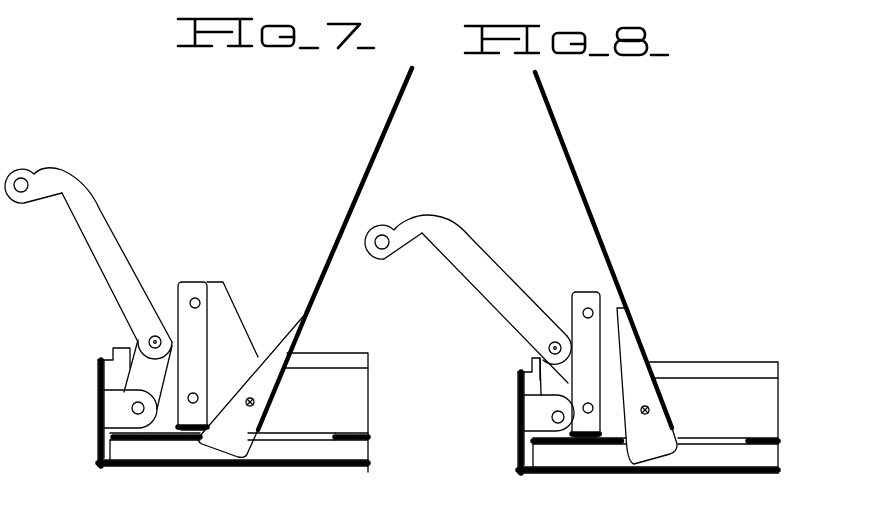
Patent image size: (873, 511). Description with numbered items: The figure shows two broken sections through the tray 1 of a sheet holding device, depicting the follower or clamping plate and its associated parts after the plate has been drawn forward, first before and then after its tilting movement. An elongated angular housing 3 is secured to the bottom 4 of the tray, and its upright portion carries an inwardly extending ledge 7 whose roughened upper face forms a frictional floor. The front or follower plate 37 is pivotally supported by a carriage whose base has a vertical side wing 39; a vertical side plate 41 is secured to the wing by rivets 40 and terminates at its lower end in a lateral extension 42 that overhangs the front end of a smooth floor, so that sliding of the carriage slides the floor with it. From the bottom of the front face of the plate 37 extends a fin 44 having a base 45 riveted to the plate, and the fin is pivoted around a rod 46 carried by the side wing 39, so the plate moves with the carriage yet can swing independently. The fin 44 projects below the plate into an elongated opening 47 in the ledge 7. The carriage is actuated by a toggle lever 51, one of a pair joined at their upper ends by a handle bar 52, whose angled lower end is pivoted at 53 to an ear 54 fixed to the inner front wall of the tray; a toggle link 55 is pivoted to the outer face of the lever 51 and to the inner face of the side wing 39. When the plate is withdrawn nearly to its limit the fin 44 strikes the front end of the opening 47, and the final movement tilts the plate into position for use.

In FIG. 7, the tray 1 is at (368, 381).
In FIG. 8, the tray 1 is at (747, 368).
In FIG. 7, the elongated angular housing 3 is at (368, 442).
In FIG. 8, the elongated angular housing 3 is at (533, 441).
In FIG. 7, the bottom of the tray 4 is at (367, 466).
In FIG. 8, the bottom of the tray 4 is at (518, 468).
In FIG. 7, the ledge 7 is at (356, 433).
In FIG. 8, the ledge 7 is at (764, 441).
In FIG. 7, the front or follower plate 37 is at (373, 166).
In FIG. 8, the front or follower plate 37 is at (575, 183).
In FIG. 7, the vertical side wing 39 is at (228, 300).
In FIG. 7, the rivet 40 is at (198, 297).
In FIG. 8, the rivet 40 is at (589, 307).
In FIG. 7, the vertical side plate 41 is at (192, 356).
In FIG. 8, the vertical side plate 41 is at (586, 364).
In FIG. 7, the lateral extension 42 is at (205, 425).
In FIG. 8, the lateral extension 42 is at (603, 432).
In FIG. 7, the fin 44 is at (283, 329).
In FIG. 8, the fin 44 is at (660, 363).
In FIG. 7, the base of fin 45 is at (300, 343).
In FIG. 8, the base of fin 45 is at (648, 349).
In FIG. 7, the rod 46 is at (256, 402).
In FIG. 8, the rod 46 is at (650, 409).
In FIG. 7, the elongated opening 47 is at (320, 435).
In FIG. 8, the elongated opening 47 is at (718, 441).
In FIG. 7, the toggle lever 51 is at (128, 258).
In FIG. 8, the toggle lever 51 is at (527, 337).
In FIG. 7, the handle bar 52 is at (25, 177).
In FIG. 8, the handle bar 52 is at (383, 234).
In FIG. 7, the pivot 53 is at (132, 409).
In FIG. 8, the pivot 53 is at (552, 417).
In FIG. 7, the ear 54 is at (108, 392).
In FIG. 8, the ear 54 is at (526, 398).
In FIG. 7, the toggle link 55 is at (167, 330).
In FIG. 8, the toggle link 55 is at (560, 340).